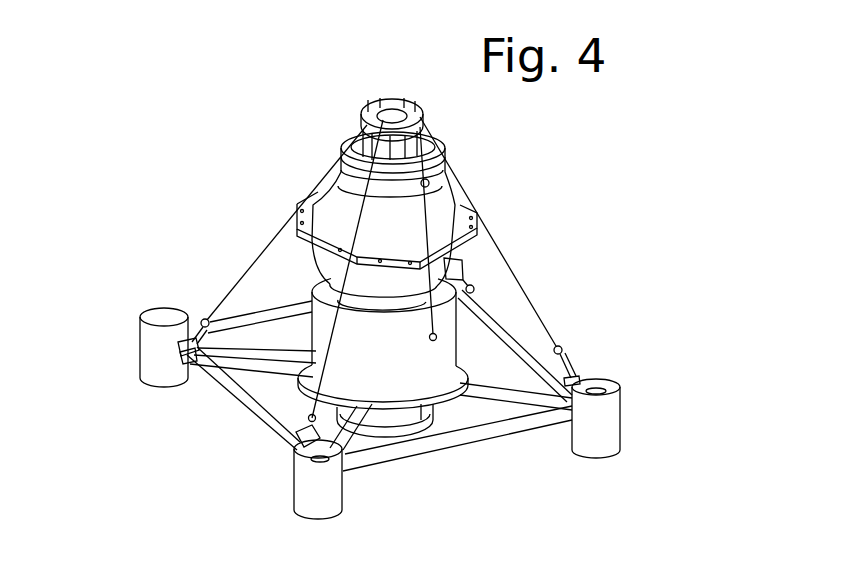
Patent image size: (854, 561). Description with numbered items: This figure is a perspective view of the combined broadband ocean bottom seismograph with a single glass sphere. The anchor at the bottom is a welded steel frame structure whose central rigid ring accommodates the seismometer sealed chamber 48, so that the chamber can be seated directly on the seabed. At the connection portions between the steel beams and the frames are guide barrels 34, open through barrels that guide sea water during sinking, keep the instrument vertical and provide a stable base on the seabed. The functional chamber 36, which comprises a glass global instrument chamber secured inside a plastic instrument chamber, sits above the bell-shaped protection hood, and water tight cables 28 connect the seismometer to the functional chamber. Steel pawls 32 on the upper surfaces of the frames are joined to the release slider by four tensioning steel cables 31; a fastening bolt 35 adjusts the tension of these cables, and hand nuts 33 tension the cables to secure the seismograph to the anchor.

The water tight cable 28 is at (440, 233).
The tensioning steel cable 31 is at (273, 250).
The steel pawl 32 is at (183, 347).
The hand nut 33 is at (185, 357).
The guide barrel 34 is at (618, 417).
The fastening bolt 35 is at (562, 352).
The functional chamber 36 is at (440, 220).
The seismometer sealed chamber 48 is at (403, 414).